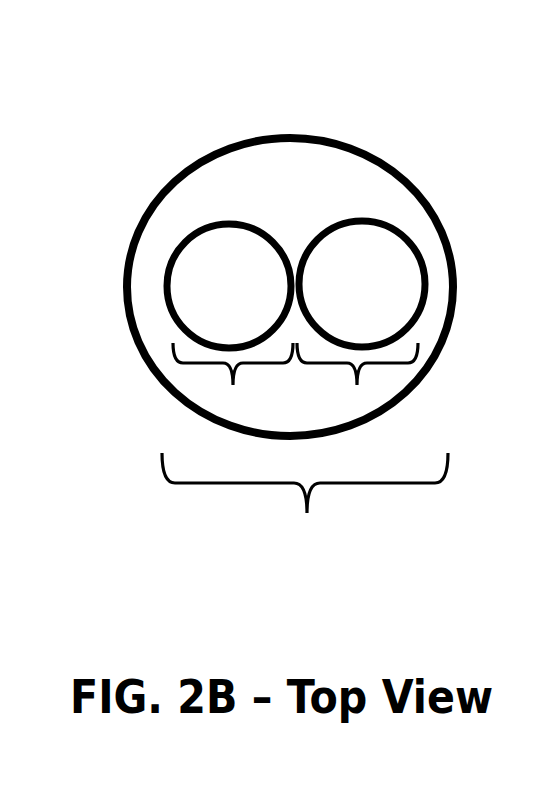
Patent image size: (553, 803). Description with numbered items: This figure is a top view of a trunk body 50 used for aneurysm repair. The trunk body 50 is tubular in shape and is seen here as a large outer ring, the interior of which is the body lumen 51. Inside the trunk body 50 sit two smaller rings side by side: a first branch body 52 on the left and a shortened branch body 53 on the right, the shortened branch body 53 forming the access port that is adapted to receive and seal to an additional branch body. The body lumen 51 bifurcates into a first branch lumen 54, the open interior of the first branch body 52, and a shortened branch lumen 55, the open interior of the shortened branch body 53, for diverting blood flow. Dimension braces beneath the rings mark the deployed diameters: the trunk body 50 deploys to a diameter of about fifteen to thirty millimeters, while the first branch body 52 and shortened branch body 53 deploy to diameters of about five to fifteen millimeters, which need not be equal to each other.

The trunk body 50 is at (430, 116).
The body lumen 51 is at (293, 172).
The first branch body 52 is at (172, 227).
The shortened branch body 53 is at (418, 226).
The first branch lumen 54 is at (220, 288).
The shortened branch lumen 55 is at (370, 285).